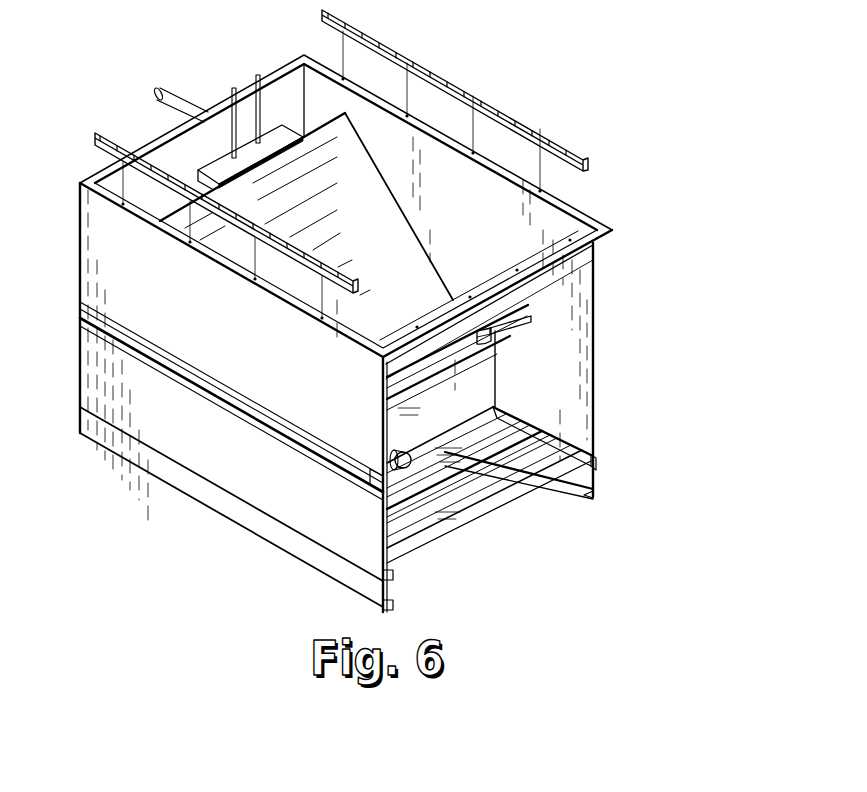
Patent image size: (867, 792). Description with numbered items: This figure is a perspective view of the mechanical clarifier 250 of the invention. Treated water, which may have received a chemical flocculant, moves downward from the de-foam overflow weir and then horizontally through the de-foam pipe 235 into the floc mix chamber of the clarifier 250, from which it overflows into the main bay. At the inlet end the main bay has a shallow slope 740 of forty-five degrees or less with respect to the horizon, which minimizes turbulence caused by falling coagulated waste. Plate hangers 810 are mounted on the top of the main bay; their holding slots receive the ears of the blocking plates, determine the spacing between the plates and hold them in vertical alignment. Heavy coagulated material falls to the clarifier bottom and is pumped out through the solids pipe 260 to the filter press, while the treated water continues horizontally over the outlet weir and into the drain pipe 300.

The clarifier 250 is at (616, 179).
The de-foam pipe 235 is at (164, 87).
The plate hanger 810 is at (94, 144).
The shallow slope 740 is at (401, 267).
The drain pipe 300 is at (497, 331).
The solids pipe 260 is at (400, 468).